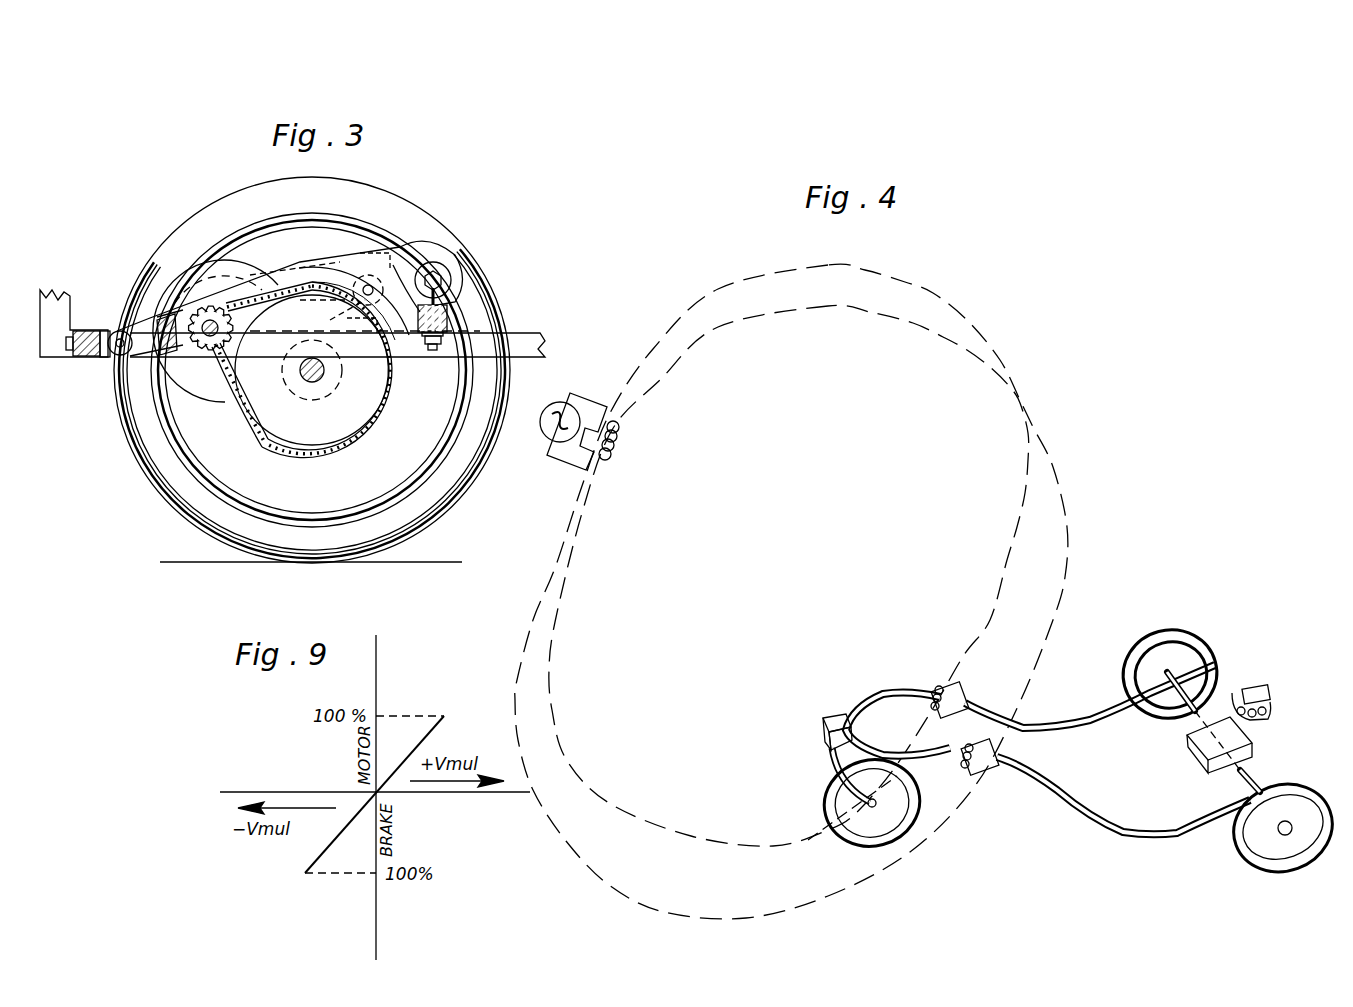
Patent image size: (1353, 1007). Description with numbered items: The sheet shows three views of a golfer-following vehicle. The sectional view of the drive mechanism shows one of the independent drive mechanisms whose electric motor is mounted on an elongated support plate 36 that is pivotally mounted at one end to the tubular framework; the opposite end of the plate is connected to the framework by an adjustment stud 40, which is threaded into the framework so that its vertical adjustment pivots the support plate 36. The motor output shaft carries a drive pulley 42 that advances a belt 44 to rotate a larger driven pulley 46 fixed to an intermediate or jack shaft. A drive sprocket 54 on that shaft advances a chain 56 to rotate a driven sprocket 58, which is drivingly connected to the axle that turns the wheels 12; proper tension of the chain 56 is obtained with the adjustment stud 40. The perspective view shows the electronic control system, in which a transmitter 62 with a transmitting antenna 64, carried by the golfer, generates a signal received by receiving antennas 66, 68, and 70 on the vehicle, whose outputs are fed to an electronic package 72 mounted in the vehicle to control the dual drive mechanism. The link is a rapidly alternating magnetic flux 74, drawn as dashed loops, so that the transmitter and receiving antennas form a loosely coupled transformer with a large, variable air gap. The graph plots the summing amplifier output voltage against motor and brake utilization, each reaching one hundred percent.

In FIG. 3, the wheels 12 is at (163, 245).
In FIG. 3, the elongated support plate 36 is at (405, 266).
In FIG. 3, the adjustment stud 40 is at (390, 327).
In FIG. 3, the drive pulley 42 is at (340, 267).
In FIG. 3, the belt 44 is at (266, 272).
In FIG. 3, the driven pulley 46 is at (198, 372).
In FIG. 3, the drive sprocket 54 is at (213, 308).
In FIG. 3, the chain 56 is at (238, 423).
In FIG. 3, the driven sprocket 58 is at (327, 427).
In FIG. 4, the transmitter 62 is at (583, 395).
In FIG. 4, the transmitting antenna 64 is at (618, 446).
In FIG. 4, the receiving antenna 66 is at (938, 689).
In FIG. 4, the receiving antenna 68 is at (992, 772).
In FIG. 4, the receiving antenna 70 is at (1255, 687).
In FIG. 4, the electronic package 72 is at (1253, 746).
In FIG. 4, the alternating magnetic flux 74 is at (962, 309).